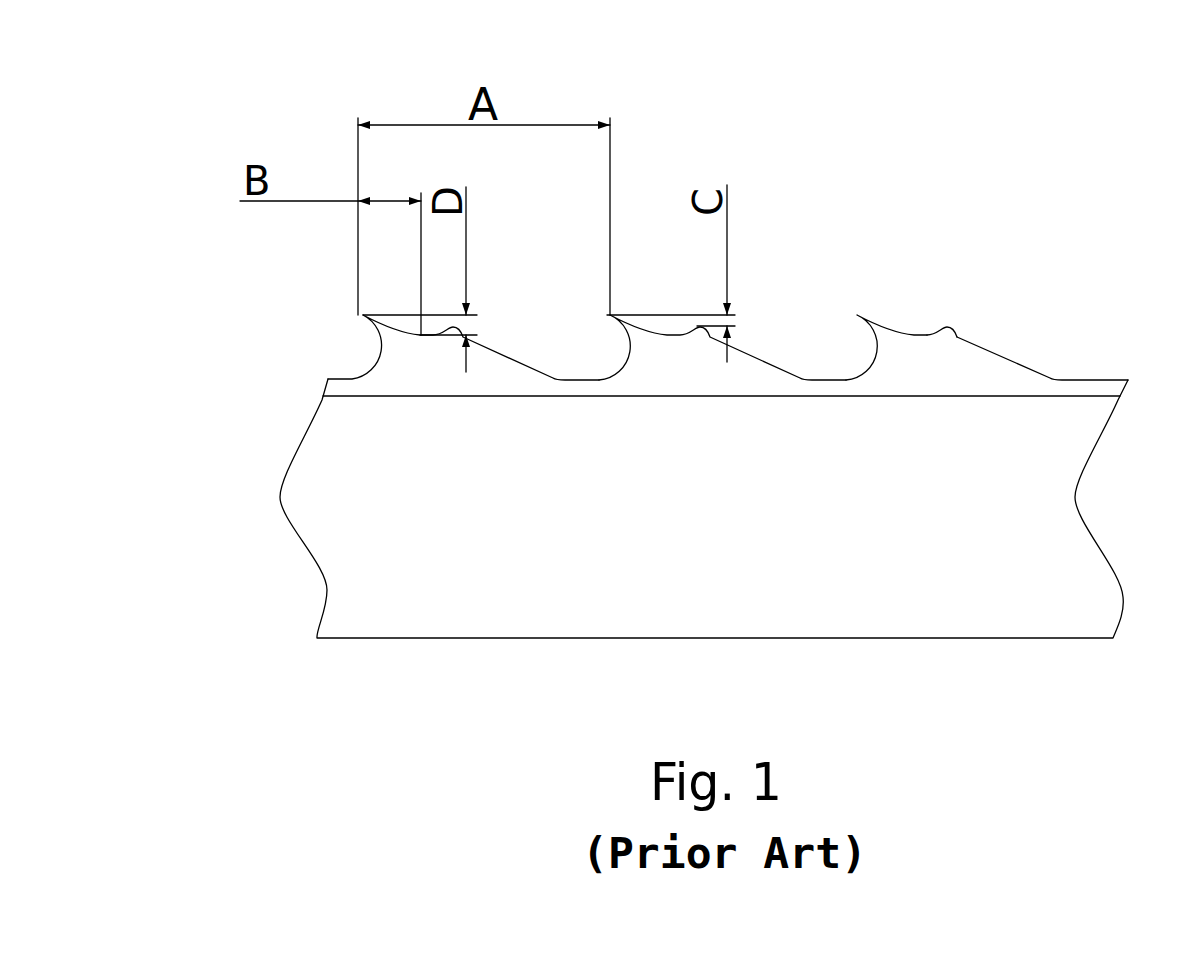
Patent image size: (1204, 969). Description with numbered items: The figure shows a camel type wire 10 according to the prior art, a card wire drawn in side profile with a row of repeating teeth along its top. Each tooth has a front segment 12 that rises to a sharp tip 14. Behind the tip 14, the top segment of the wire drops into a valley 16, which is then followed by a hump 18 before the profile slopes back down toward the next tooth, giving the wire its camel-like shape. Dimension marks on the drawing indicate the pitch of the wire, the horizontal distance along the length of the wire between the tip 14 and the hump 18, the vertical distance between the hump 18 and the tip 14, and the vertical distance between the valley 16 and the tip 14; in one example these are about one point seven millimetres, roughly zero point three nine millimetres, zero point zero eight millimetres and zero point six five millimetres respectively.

The camel type wire 10 is at (1112, 118).
The front segment 12 is at (333, 347).
The tip 14 is at (357, 315).
The valley 16 is at (920, 322).
The hump 18 is at (958, 325).